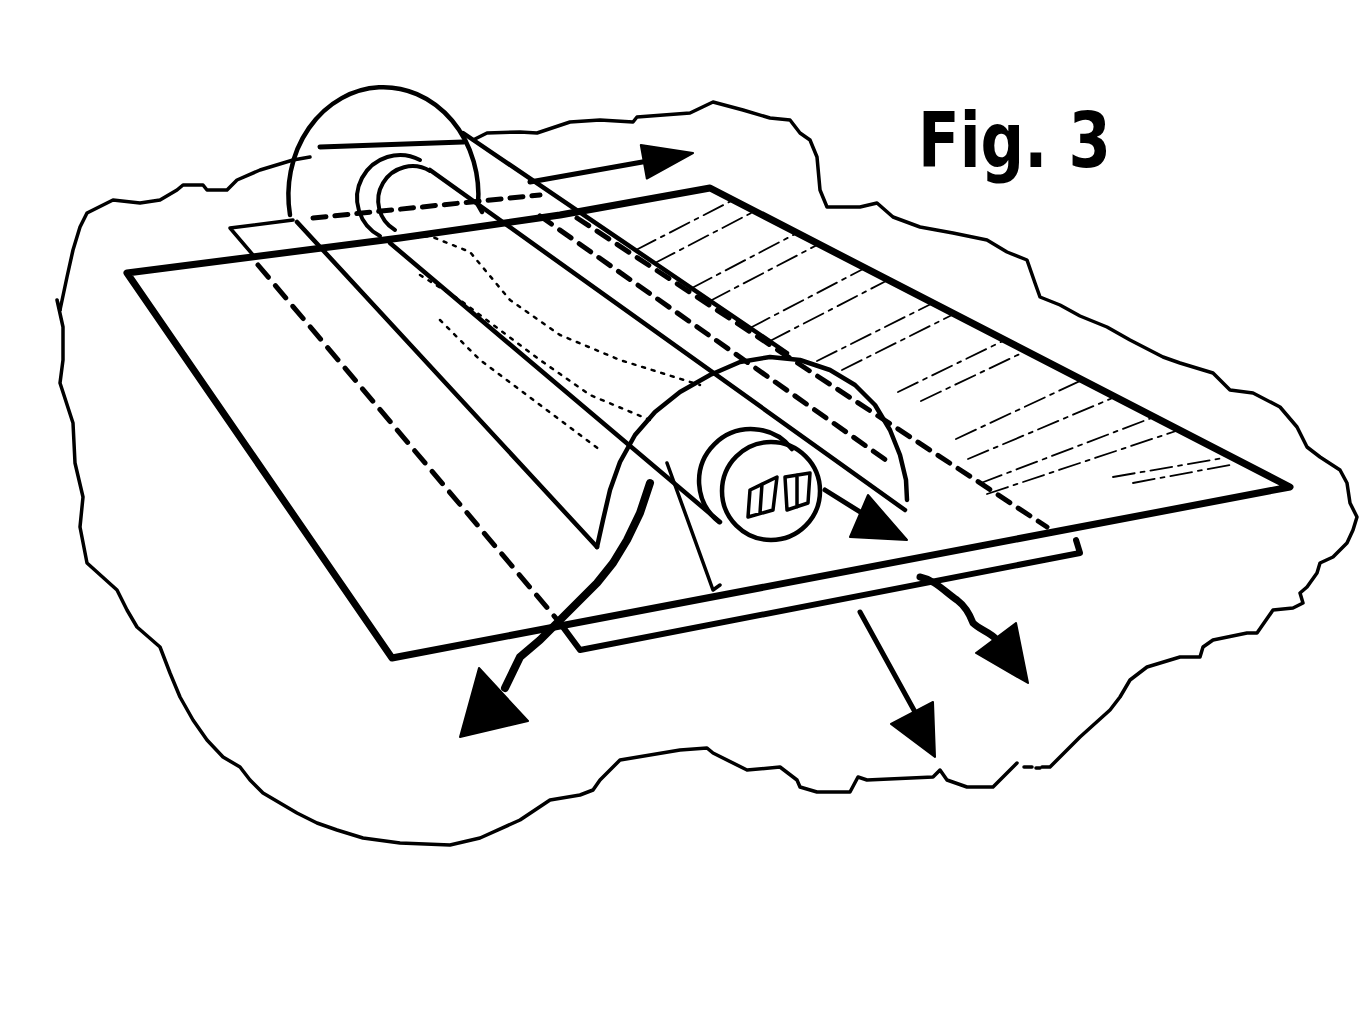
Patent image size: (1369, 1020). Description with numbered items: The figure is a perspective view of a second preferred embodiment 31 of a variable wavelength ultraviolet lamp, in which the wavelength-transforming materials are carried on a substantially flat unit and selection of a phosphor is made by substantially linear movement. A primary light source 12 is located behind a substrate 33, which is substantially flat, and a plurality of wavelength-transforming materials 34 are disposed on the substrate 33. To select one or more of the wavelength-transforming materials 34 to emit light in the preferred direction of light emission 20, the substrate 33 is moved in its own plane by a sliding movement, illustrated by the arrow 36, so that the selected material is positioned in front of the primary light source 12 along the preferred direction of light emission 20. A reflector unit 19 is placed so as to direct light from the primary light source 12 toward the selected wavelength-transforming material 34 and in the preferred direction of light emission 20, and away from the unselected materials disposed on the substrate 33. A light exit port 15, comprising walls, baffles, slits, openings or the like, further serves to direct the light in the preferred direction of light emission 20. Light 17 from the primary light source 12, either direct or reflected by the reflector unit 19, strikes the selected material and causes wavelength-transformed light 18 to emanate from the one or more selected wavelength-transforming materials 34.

The primary light source 12 is at (670, 463).
The light exit port 15 is at (728, 607).
The light from the primary light source 17 is at (958, 422).
The wavelength-transformed light 18 is at (995, 656).
The reflector unit 19 is at (368, 132).
The preferred direction of light emission 20 is at (897, 694).
The second preferred embodiment 31 is at (661, 418).
The substrate 33 is at (280, 517).
The wavelength-transforming materials 34 is at (1037, 453).
The arrow 36 is at (636, 156).